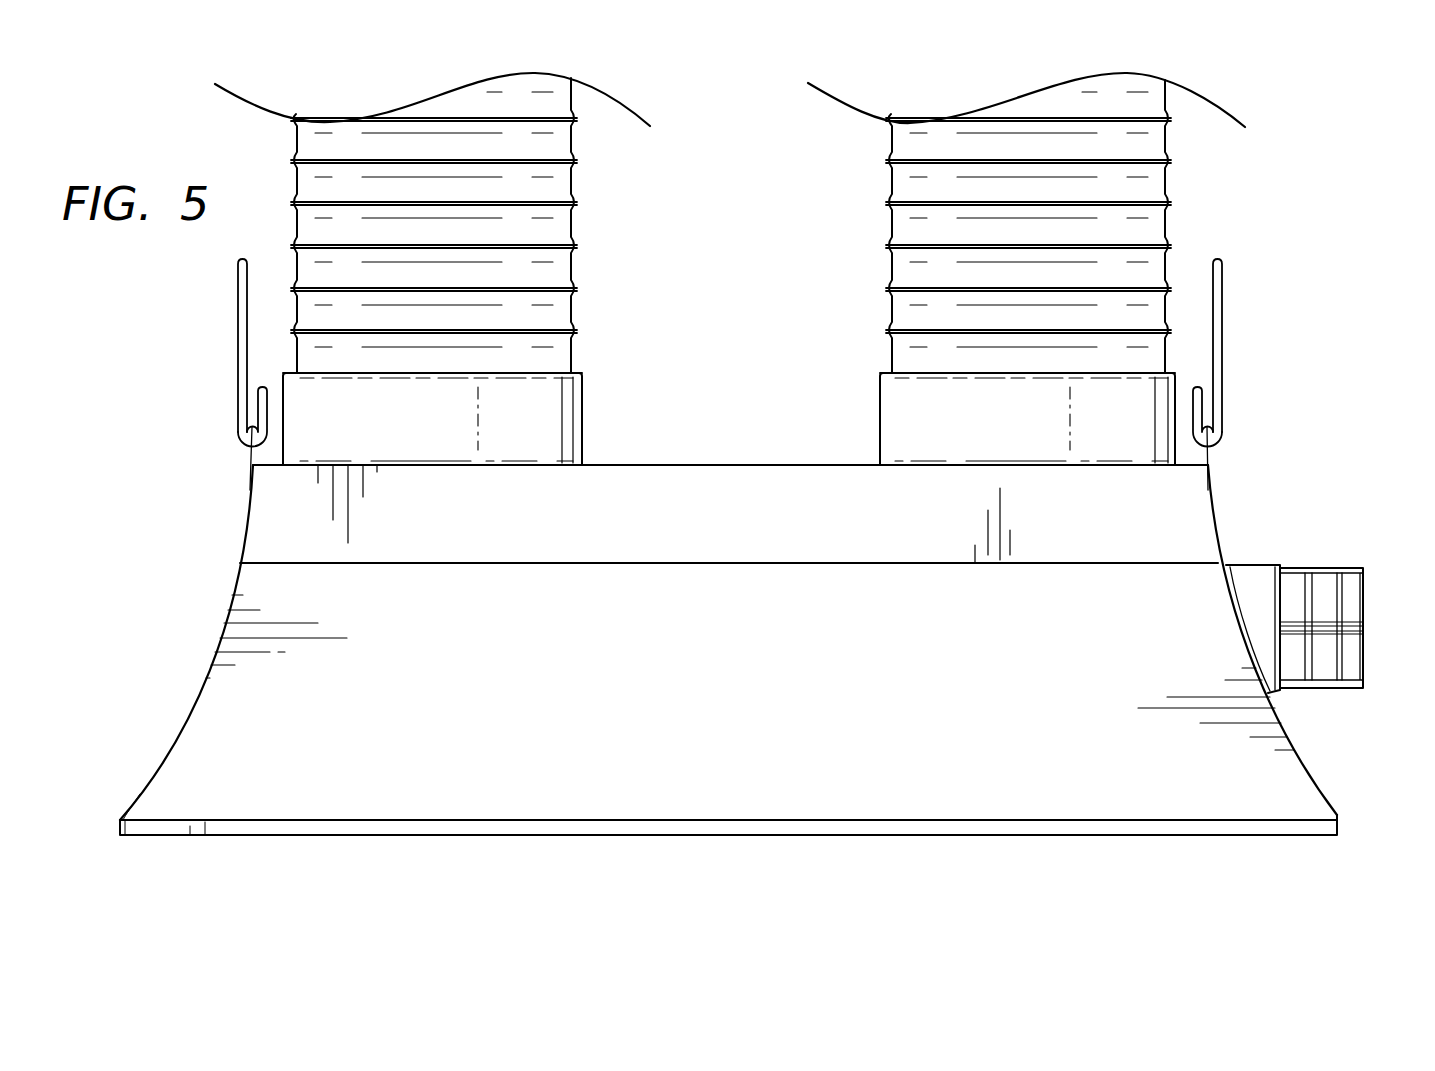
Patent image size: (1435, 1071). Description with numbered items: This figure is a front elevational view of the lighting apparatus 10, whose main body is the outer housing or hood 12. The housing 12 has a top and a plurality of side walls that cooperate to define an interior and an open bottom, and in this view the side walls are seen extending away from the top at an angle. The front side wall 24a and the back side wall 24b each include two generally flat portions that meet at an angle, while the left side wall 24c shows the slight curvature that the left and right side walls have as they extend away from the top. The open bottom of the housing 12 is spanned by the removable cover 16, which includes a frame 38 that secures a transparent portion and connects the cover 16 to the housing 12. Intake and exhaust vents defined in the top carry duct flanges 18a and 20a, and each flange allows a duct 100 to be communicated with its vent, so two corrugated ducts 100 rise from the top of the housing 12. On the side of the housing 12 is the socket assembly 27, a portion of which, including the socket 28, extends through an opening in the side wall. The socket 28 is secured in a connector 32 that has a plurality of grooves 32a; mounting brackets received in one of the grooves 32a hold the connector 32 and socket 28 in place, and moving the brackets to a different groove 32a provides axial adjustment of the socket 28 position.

The lighting apparatus 10 is at (733, 172).
The outer housing 12 is at (728, 642).
The cover 16 is at (882, 822).
The duct flange 18a is at (537, 435).
The duct flange 20a is at (925, 402).
The front side wall 24a is at (188, 715).
The back side wall 24b is at (732, 685).
The left side wall 24c is at (1310, 781).
The socket assembly 27 is at (1319, 604).
The socket 28 is at (1252, 567).
The connector 32 is at (1346, 678).
The grooves 32a is at (1337, 672).
The frame 38 is at (587, 822).
The duct 100 is at (557, 268).